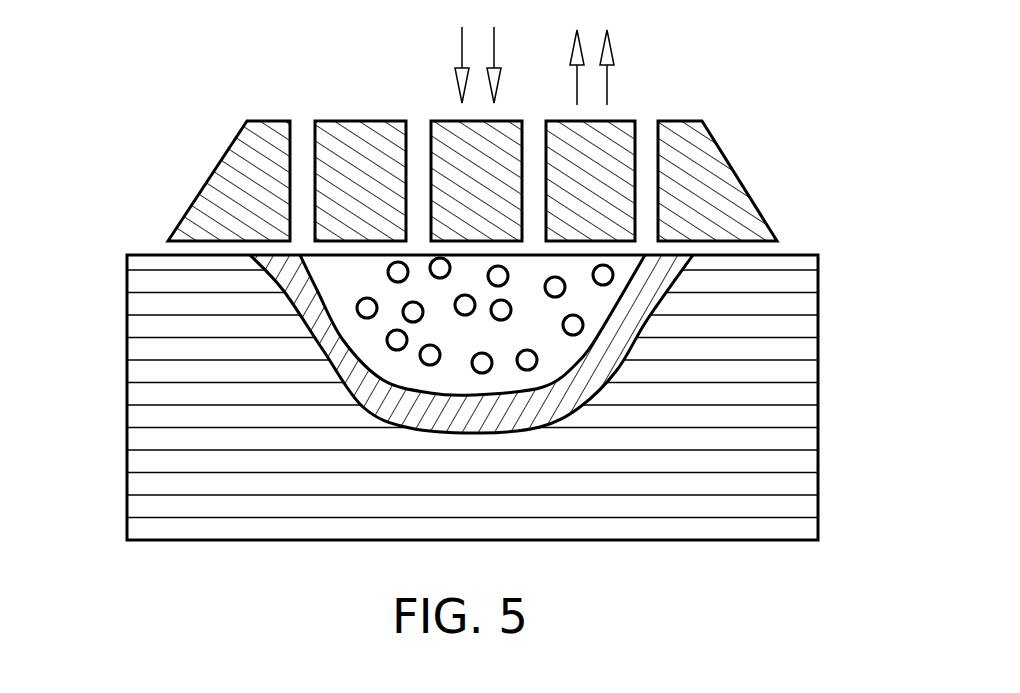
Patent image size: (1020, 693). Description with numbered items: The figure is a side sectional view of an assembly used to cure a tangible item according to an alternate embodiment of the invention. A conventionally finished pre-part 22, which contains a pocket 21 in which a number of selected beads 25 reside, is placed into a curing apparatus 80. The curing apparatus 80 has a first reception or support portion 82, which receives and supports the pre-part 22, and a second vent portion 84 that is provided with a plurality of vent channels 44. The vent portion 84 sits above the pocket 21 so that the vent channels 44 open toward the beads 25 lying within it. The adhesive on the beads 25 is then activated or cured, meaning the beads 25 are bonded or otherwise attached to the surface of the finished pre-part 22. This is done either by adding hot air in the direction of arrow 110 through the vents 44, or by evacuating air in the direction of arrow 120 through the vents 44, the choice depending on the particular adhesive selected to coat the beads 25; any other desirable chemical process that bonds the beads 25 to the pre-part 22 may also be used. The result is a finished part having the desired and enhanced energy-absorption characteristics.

The curing apparatus 80 is at (800, 97).
The vent channels 44 is at (493, 157).
The second vent portion 84 is at (732, 200).
The arrow 110 is at (460, 48).
The arrow 120 is at (609, 78).
The first reception or support portion 82 is at (797, 300).
The pre-part 22 is at (307, 298).
The pocket 21 is at (558, 352).
The beads 25 is at (484, 352).